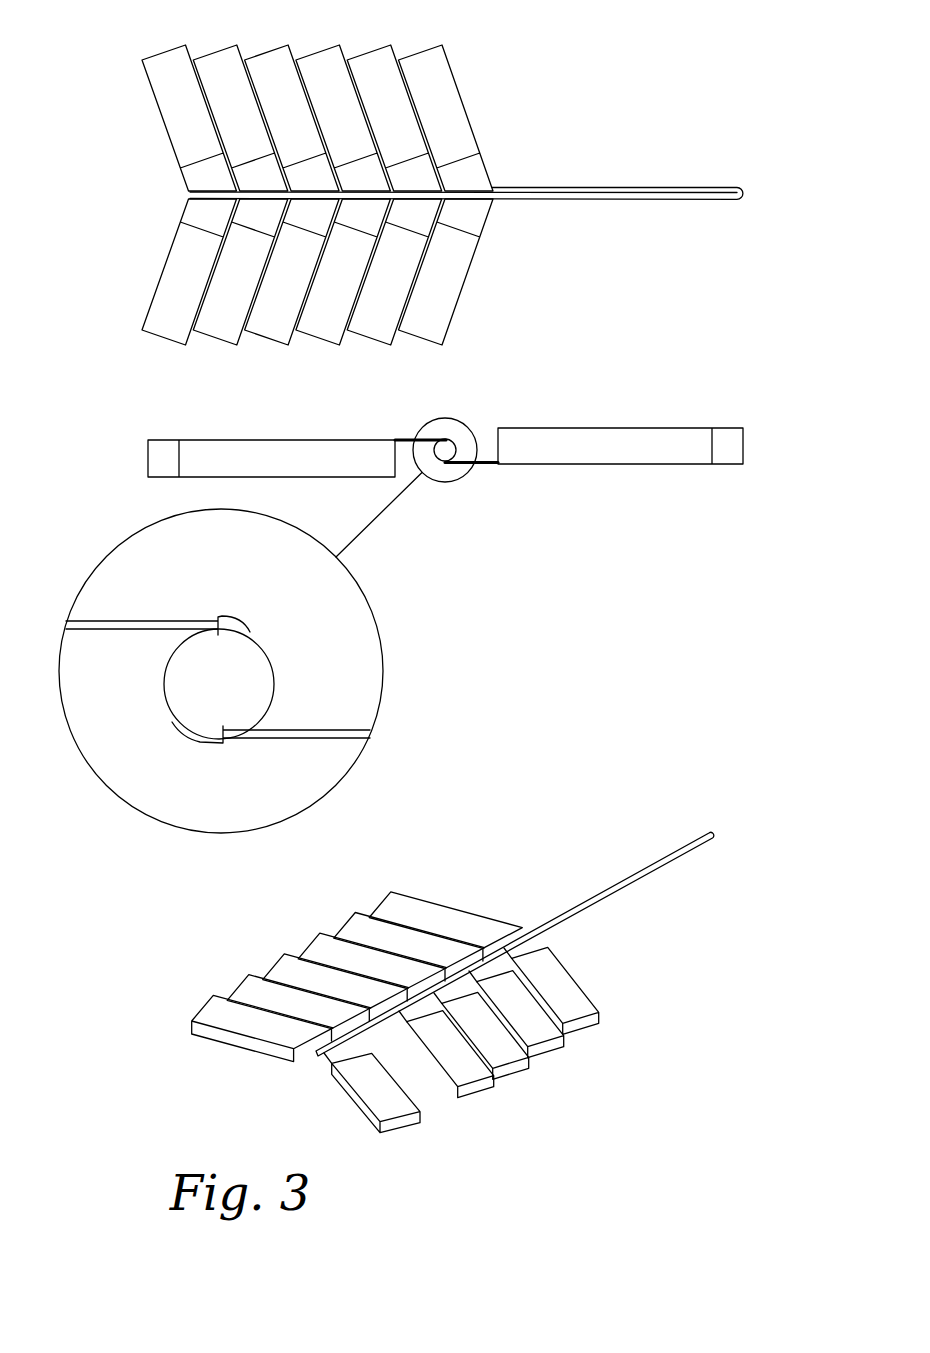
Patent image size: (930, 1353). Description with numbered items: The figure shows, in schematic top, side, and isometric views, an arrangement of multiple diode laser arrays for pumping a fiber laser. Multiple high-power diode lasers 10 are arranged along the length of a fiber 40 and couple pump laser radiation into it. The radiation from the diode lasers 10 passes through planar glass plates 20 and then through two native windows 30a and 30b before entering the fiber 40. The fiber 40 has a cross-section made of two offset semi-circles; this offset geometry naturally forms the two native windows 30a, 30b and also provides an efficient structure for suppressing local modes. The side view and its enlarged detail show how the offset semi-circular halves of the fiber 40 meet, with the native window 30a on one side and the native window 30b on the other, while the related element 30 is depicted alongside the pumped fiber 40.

The high-power diode laser 10 is at (277, 87).
The planar glass plate 20 is at (312, 222).
The hinge strip 30 is at (687, 188).
The native window 30a is at (220, 628).
The native window 30b is at (213, 732).
The fiber 40 is at (550, 187).